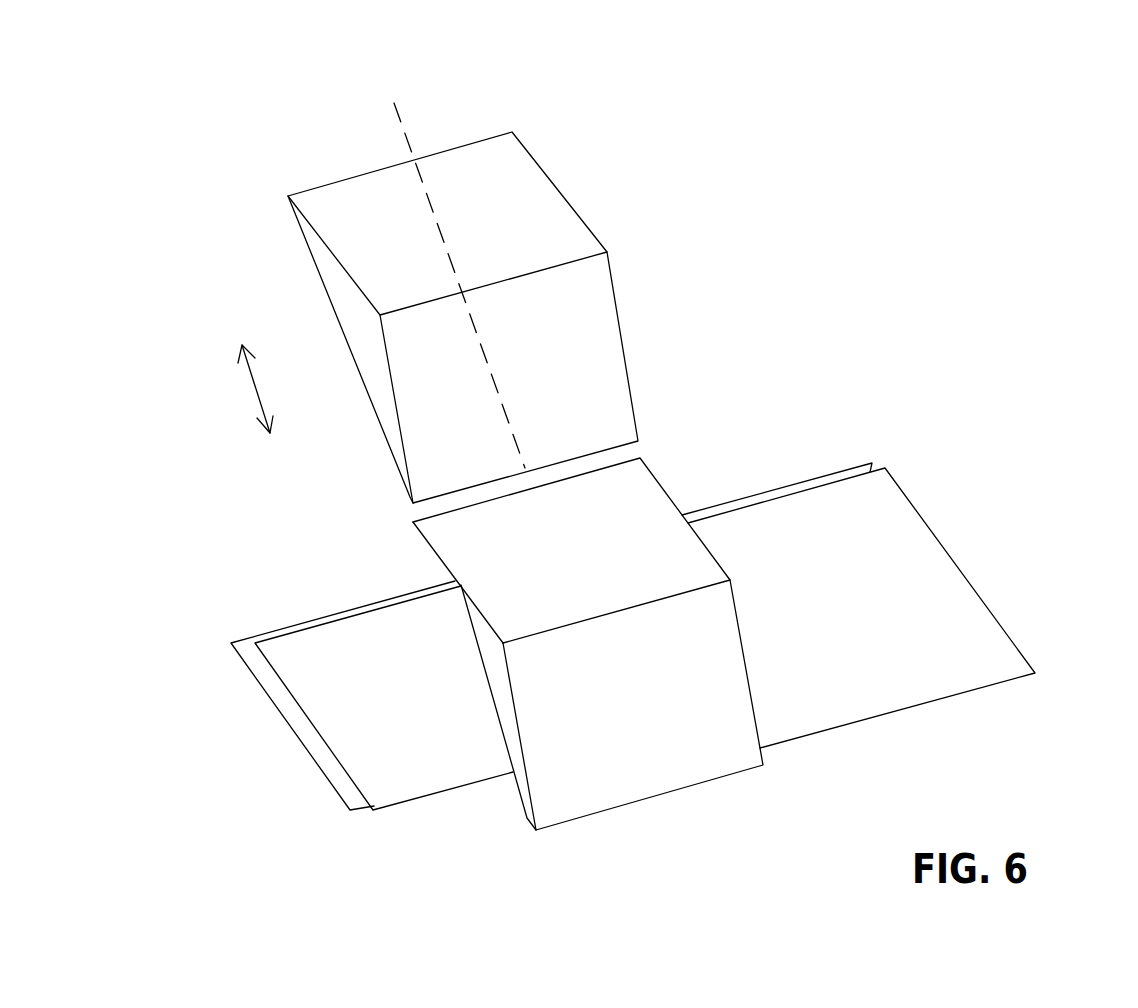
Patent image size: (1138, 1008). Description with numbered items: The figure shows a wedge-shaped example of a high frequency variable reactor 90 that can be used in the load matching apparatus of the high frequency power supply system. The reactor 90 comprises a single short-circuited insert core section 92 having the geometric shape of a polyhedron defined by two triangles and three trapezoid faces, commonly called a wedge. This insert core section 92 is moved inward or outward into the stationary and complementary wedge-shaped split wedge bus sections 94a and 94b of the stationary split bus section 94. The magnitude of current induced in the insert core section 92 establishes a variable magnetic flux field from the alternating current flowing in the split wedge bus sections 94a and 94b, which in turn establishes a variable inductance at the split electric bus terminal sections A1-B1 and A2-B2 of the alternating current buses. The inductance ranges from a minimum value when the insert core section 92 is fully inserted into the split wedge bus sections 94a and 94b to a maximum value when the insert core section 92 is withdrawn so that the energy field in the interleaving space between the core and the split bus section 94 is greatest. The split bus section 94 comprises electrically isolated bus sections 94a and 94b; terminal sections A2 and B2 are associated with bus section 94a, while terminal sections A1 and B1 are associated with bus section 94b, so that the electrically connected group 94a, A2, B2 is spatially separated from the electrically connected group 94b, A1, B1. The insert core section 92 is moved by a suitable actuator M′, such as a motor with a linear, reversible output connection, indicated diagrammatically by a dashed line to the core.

The high frequency variable reactor 90 is at (1027, 279).
The insert core section 92 is at (598, 327).
The stationary split bus section 94 is at (1032, 514).
The split wedge bus section 94a is at (442, 571).
The split wedge bus section 94b is at (662, 755).
The split electrical terminal section A1 is at (425, 772).
The split electric terminal section A2 is at (277, 690).
The split electrical terminal section B1 is at (902, 680).
The split electric terminal section B2 is at (830, 478).
The actuator M′ is at (447, 261).